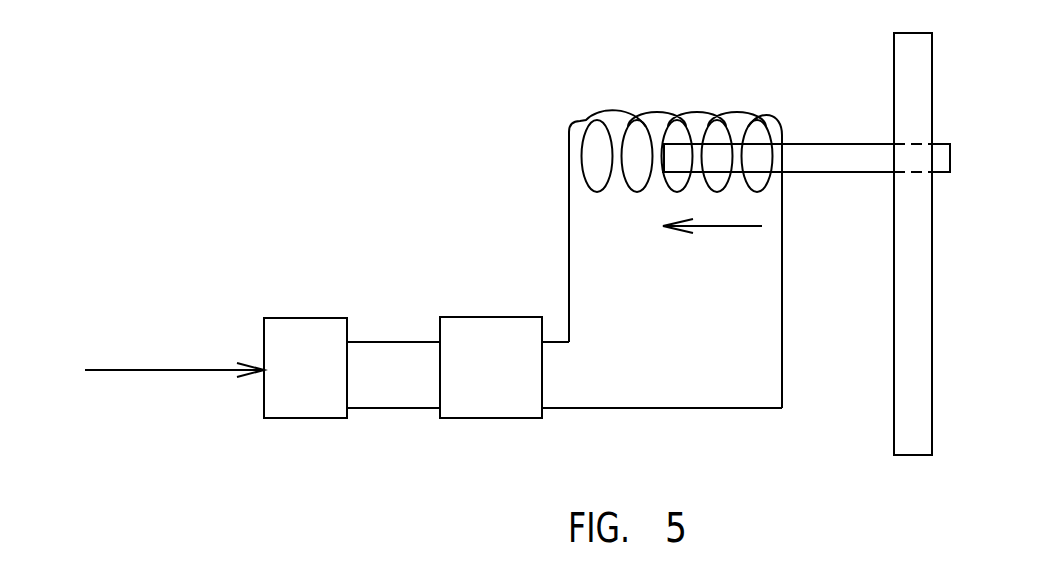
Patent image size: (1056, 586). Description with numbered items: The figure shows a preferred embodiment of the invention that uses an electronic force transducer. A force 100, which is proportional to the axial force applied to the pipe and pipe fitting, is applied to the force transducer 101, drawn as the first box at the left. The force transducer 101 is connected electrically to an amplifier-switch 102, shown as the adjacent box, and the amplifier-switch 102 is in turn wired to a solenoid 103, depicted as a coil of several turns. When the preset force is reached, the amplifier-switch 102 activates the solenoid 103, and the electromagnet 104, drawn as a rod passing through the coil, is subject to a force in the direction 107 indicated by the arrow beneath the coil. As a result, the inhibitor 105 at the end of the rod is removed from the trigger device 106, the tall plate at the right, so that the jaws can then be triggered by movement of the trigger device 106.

The force 100 is at (174, 350).
The force transducer 101 is at (305, 368).
The amplifier-switch 102 is at (491, 367).
The solenoid 103 is at (582, 112).
The electromagnet 104 is at (700, 143).
The inhibitor 105 is at (950, 155).
The trigger device 106 is at (932, 260).
The direction 107 is at (712, 242).